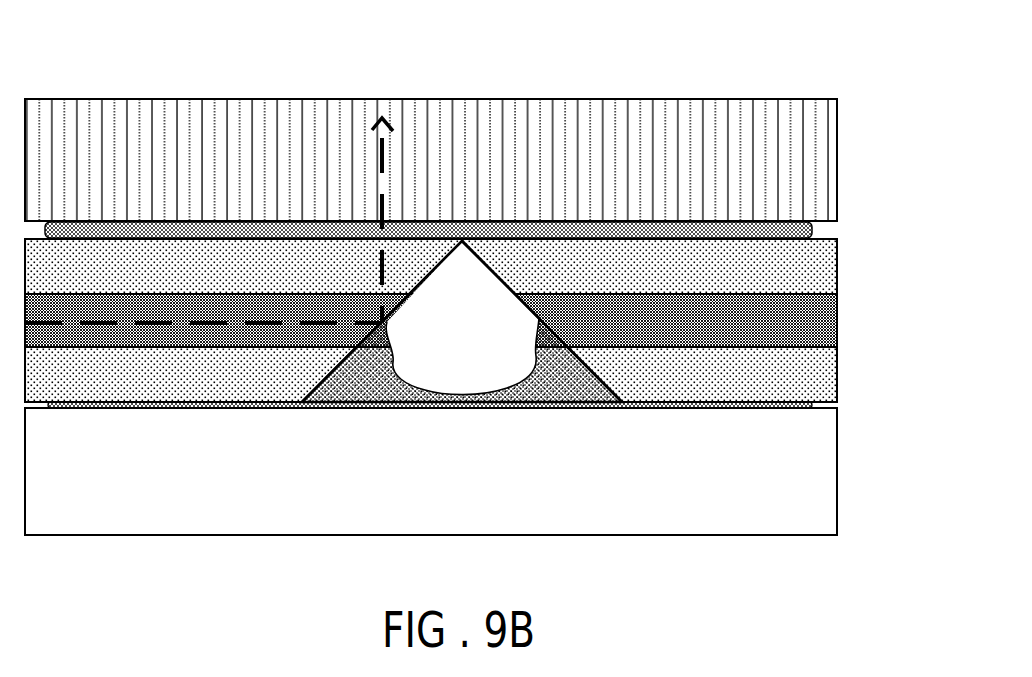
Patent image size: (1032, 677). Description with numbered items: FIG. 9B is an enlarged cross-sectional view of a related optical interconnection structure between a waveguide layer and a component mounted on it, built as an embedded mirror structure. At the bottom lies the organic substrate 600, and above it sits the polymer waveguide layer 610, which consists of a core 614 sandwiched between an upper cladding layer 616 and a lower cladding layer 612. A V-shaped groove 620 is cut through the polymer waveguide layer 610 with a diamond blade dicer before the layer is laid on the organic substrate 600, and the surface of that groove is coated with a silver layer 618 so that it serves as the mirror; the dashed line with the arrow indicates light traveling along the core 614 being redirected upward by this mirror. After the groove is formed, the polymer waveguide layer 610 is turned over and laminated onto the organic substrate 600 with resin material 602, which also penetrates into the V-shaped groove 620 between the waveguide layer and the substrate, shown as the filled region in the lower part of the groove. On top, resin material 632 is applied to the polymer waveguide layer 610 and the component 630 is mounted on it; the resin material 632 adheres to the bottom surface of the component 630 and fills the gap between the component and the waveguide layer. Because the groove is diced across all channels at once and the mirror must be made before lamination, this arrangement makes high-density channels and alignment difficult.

The organic substrate 600 is at (478, 491).
The resin material 602 is at (471, 396).
The polymer waveguide layer 610 is at (474, 320).
The lower cladding layer 612 is at (805, 391).
The core 614 is at (812, 330).
The upper cladding layer 616 is at (812, 272).
The silver layer 618 is at (443, 264).
The V-shaped groove 620 is at (462, 321).
The component 630 is at (764, 98).
The resin material 632 is at (812, 234).